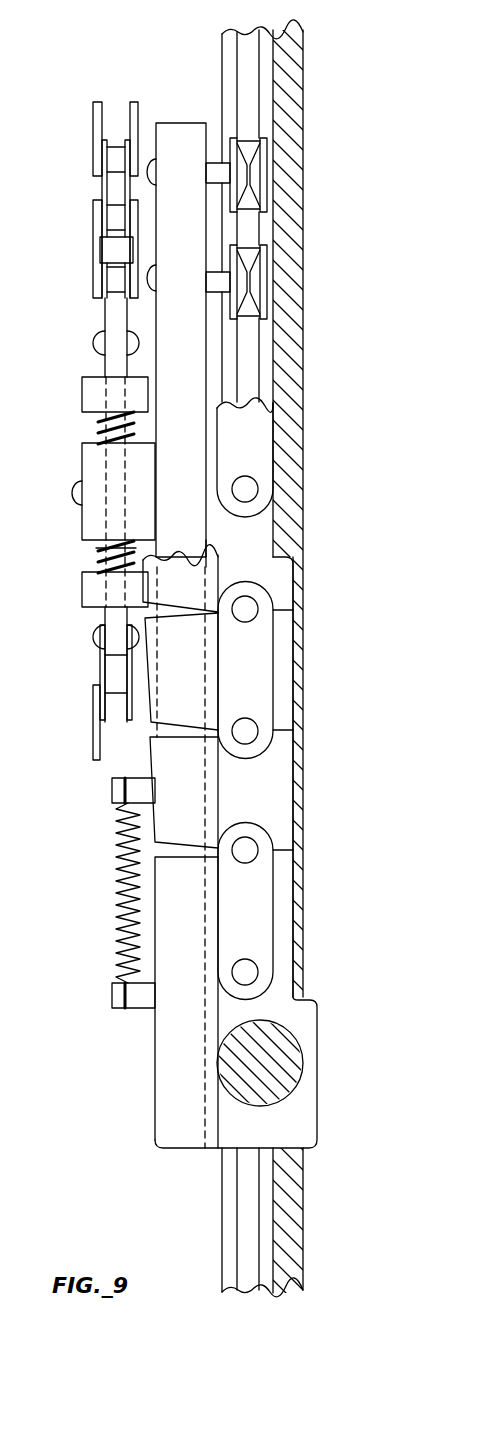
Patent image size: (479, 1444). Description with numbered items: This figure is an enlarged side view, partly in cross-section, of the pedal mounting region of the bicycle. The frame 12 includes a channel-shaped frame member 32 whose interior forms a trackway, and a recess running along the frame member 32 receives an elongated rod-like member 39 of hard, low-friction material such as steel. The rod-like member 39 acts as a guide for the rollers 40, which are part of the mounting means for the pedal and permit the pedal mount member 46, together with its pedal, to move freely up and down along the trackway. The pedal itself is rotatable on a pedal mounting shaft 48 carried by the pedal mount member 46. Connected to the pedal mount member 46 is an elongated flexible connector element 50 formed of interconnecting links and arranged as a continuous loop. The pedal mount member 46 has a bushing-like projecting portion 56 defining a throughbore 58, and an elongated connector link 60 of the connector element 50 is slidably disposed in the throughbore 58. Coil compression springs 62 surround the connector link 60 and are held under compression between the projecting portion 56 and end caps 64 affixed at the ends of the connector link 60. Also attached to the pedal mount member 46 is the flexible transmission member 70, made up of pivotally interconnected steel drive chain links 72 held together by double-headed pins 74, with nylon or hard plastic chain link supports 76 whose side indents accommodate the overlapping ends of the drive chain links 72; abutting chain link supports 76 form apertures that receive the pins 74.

The frame 12 is at (283, 406).
The frame member 32 is at (288, 346).
The rod-like member 39 is at (250, 33).
The roller 40 is at (255, 170).
The pedal mount member 46 is at (307, 1018).
The pedal mounting shaft 48 is at (290, 1072).
The elongated flexible connector element 50 is at (98, 192).
The projecting portion 56 is at (90, 458).
The throughbore 58 is at (105, 520).
The connector link 60 is at (96, 552).
The coil compression spring 62 is at (98, 422).
The end cap 64 is at (96, 382).
The flexible transmission member 70 is at (298, 668).
The drive chain link 72 is at (262, 545).
The double-headed pin 74 is at (250, 490).
The chain link support 76 is at (283, 630).